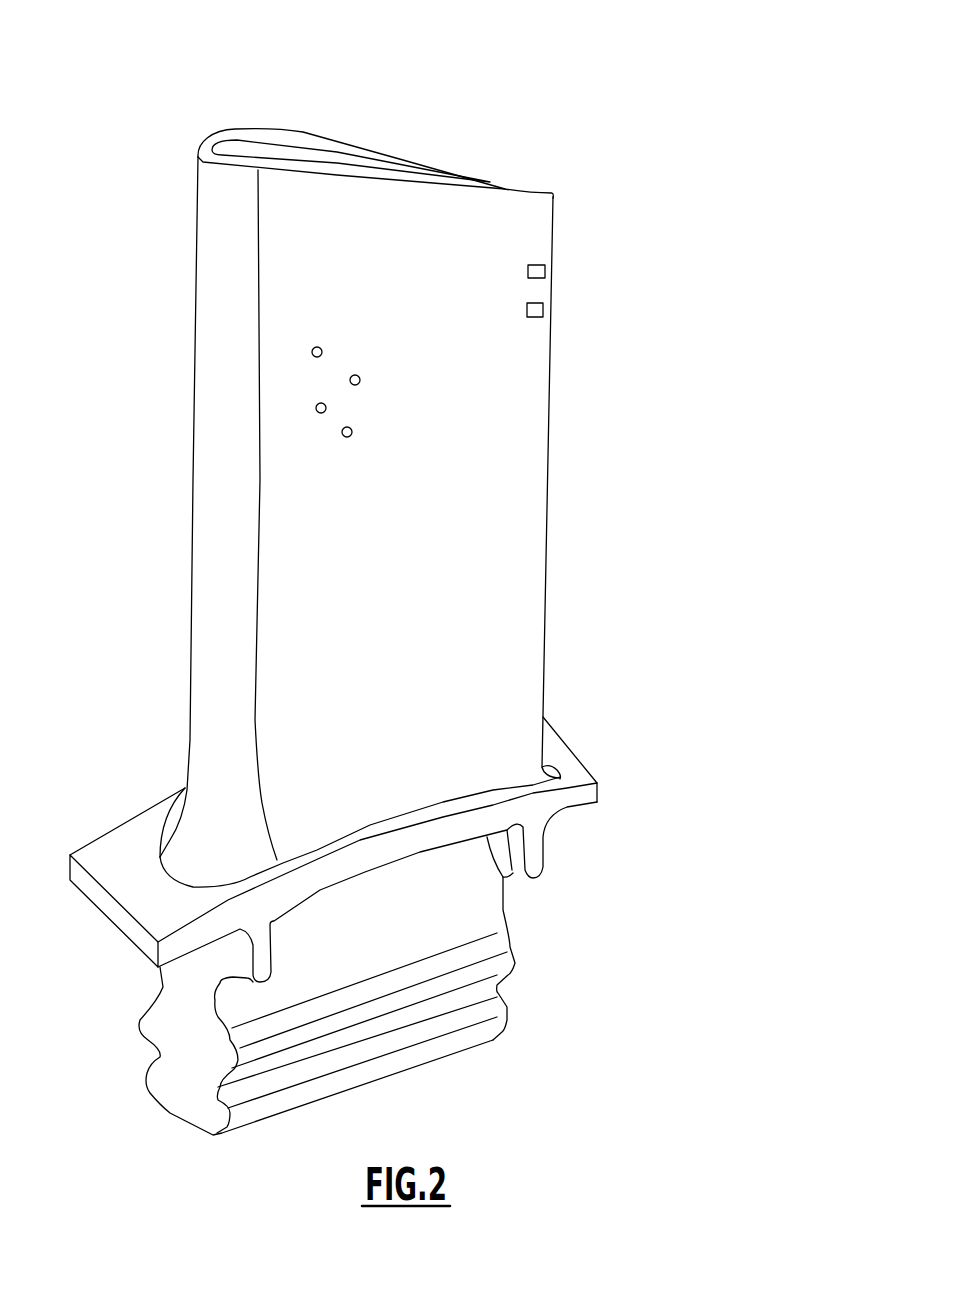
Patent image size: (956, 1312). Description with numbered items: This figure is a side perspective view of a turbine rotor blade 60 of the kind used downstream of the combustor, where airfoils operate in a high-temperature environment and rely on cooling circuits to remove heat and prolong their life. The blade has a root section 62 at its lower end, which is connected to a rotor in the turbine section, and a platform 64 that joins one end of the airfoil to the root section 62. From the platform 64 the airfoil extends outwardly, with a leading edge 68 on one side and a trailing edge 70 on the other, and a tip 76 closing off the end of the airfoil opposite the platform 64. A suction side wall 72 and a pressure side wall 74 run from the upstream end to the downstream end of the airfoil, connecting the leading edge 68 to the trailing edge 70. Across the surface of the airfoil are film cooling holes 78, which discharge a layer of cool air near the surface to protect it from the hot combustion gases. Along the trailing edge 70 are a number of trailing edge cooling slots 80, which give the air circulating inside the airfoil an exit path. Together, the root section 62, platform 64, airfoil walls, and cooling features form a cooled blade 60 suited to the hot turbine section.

The turbine rotor blade 60 is at (727, 228).
The root section 62 is at (510, 988).
The platform 64 is at (112, 857).
The leading edge 68 is at (192, 555).
The trailing edge 70 is at (547, 623).
The suction side wall 72 is at (302, 128).
The pressure side wall 74 is at (450, 213).
The tip 76 is at (242, 147).
The film cooling holes 78 is at (312, 353).
The trailing edge cooling slots 80 is at (545, 272).